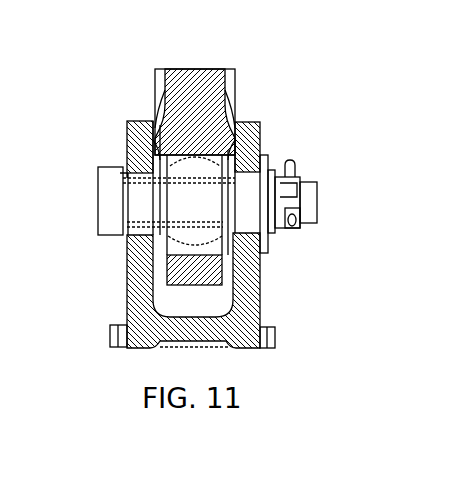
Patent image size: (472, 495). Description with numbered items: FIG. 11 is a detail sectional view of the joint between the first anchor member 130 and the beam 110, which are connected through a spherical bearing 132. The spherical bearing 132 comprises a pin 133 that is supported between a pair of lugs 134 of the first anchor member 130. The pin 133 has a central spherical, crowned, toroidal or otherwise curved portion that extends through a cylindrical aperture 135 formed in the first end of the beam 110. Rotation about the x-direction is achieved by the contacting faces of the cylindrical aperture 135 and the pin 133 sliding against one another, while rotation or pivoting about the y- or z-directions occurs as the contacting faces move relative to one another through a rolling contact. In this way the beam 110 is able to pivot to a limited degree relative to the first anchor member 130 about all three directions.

The beam 110 is at (205, 82).
The first anchor member 130 is at (258, 262).
The spherical bearing 132 is at (262, 134).
The pin 133 is at (127, 121).
The lugs 134 is at (135, 150).
The cylindrical aperture 135 is at (140, 249).